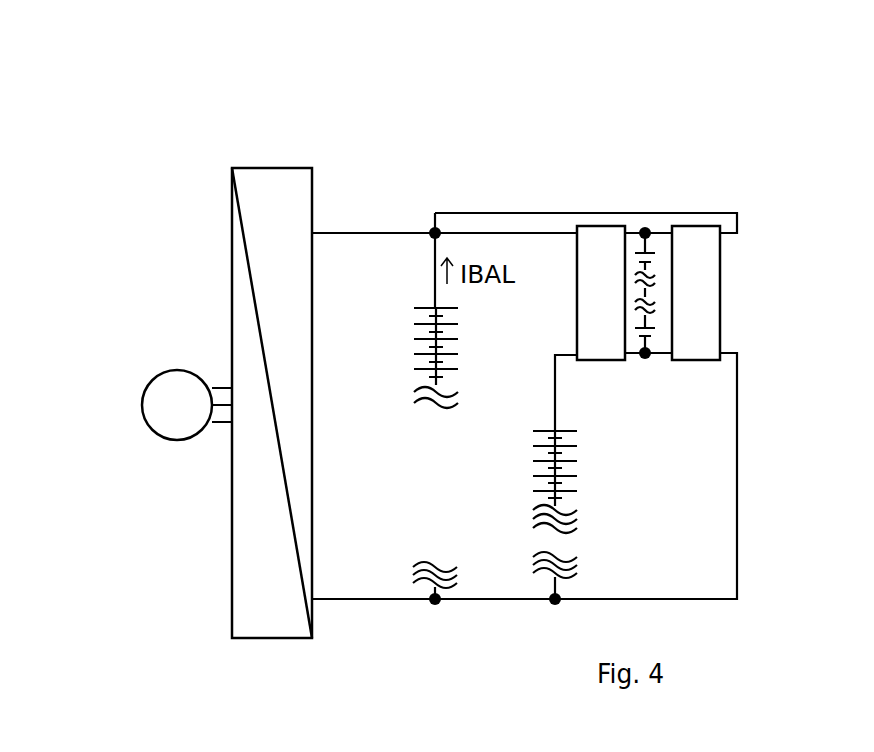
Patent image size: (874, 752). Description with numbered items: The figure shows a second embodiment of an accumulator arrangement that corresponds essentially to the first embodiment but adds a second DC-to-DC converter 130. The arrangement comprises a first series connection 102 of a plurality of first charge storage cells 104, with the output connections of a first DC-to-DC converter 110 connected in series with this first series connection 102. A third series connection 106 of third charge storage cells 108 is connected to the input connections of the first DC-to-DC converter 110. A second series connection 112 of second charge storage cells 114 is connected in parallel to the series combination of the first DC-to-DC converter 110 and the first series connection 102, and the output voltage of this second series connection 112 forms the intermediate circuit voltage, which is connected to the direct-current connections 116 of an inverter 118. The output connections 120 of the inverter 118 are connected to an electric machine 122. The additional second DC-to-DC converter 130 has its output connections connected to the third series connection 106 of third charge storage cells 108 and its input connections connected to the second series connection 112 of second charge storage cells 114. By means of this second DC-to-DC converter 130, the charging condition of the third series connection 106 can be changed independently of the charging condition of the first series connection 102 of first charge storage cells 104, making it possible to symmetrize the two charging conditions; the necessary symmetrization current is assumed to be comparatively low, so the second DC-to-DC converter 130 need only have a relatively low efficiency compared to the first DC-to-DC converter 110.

The first series connection 102 is at (590, 413).
The first charge storage cells 104 is at (528, 430).
The third series connection 106 is at (662, 231).
The third charge storage cells 108 is at (636, 248).
The first DC-to-DC converter 110 is at (594, 247).
The second series connection 112 is at (419, 285).
The second charge storage cells 114 is at (465, 307).
The direct-current connections 116 is at (332, 450).
The inverter 118 is at (266, 180).
The output connections 120 is at (220, 350).
The electric machine 122 is at (165, 415).
The second DC-to-DC converter 130 is at (710, 327).